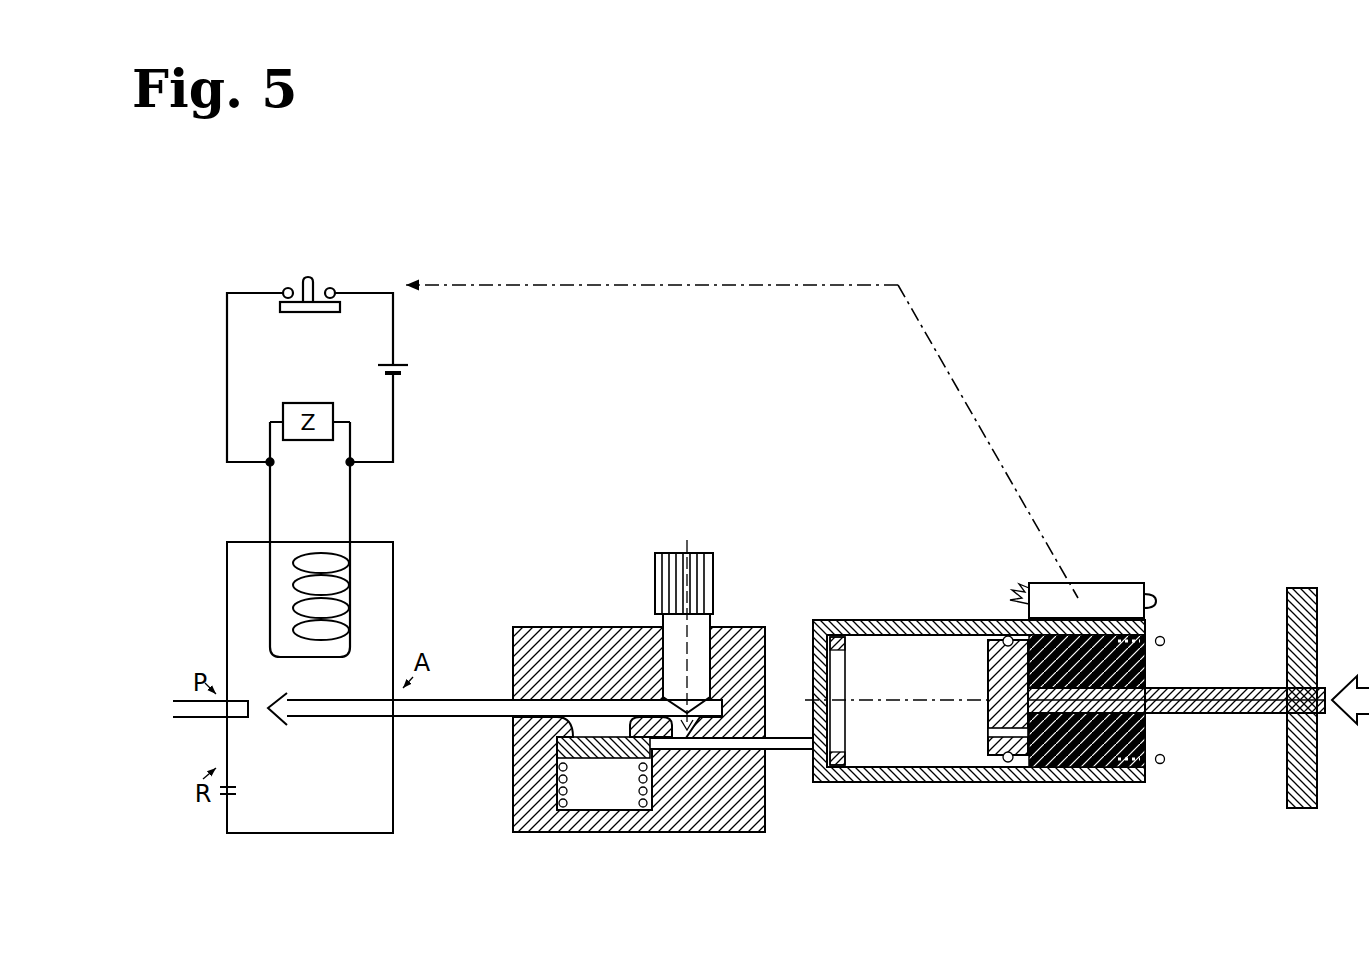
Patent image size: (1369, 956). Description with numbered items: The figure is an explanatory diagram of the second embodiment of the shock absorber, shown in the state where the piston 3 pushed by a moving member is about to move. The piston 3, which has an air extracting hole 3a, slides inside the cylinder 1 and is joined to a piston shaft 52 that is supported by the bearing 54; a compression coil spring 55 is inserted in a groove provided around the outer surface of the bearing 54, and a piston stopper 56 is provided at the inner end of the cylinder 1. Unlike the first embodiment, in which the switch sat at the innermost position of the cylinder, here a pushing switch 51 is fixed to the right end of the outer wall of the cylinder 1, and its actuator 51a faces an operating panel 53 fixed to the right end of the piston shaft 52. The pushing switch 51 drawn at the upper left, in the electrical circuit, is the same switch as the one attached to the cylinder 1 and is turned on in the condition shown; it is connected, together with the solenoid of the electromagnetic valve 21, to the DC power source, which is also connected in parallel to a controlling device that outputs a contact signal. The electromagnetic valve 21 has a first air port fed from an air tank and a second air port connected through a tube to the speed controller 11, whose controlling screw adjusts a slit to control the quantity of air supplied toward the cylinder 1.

The cylinder 1 is at (848, 620).
The piston 3 is at (988, 716).
The air extracting hole 3a is at (1017, 782).
The speed controller 11 is at (566, 618).
The electromagnetic valve 21 is at (216, 530).
The pushing switch 51 is at (318, 266).
The actuator 51a is at (305, 280).
The piston shaft 52 is at (1220, 703).
The operating panel 53 is at (1303, 808).
The bearing 54 is at (1075, 782).
The compression coil spring 55 is at (1166, 638).
The piston stopper 56 is at (832, 782).